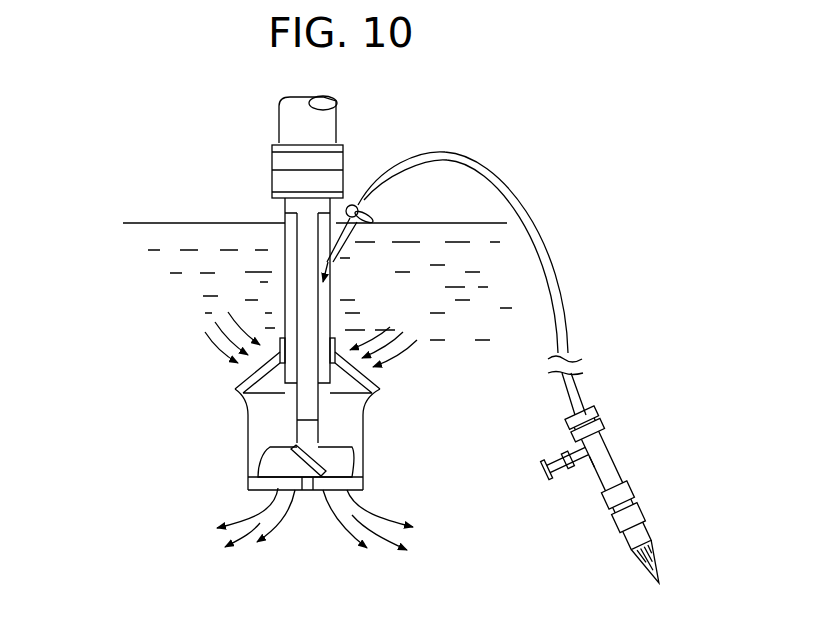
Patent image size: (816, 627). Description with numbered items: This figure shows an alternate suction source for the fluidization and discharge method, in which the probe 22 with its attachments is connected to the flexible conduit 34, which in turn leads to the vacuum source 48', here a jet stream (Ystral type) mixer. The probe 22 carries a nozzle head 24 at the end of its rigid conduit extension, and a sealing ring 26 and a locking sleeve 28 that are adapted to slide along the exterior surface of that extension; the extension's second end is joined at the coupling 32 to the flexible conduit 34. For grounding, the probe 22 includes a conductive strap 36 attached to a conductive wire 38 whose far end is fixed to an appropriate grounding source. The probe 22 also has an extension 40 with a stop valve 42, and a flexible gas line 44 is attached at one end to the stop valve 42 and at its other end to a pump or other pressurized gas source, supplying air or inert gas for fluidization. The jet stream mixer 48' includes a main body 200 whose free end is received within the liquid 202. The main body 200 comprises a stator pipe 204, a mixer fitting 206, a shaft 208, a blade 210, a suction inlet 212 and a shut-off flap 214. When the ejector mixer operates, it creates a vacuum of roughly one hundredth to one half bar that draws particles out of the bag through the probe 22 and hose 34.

The vacuum source 48' is at (322, 290).
The main body 200 is at (338, 124).
The liquid 202 is at (152, 223).
The stator pipe 204 is at (330, 316).
The mixer fitting 206 is at (353, 403).
The shaft 208 is at (308, 289).
The blade 210 is at (277, 452).
The suction inlet 212 is at (344, 243).
The shut-off flap 214 is at (365, 212).
The flexible conduit 34 is at (541, 210).
The coupling 32 is at (600, 414).
The conductive wire 38 is at (605, 432).
The probe 22 is at (620, 470).
The conductive strap 36 is at (594, 476).
The locking sleeve 28 is at (640, 489).
The sealing ring 26 is at (648, 508).
The nozzle head 24 is at (656, 532).
The extension 40 is at (583, 449).
The stop valve 42 is at (560, 477).
The flexible gas line 44 is at (542, 470).